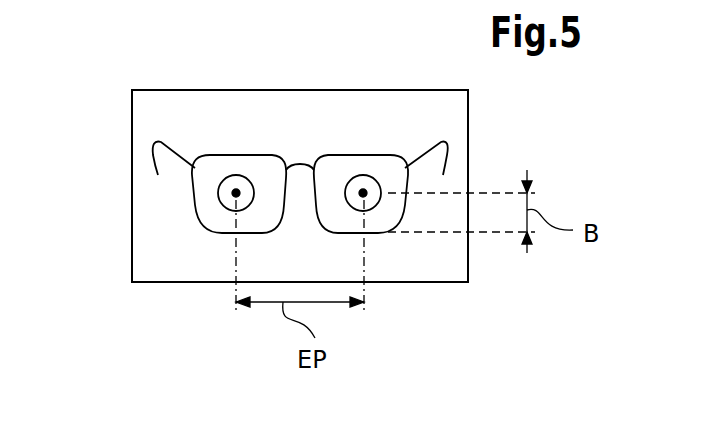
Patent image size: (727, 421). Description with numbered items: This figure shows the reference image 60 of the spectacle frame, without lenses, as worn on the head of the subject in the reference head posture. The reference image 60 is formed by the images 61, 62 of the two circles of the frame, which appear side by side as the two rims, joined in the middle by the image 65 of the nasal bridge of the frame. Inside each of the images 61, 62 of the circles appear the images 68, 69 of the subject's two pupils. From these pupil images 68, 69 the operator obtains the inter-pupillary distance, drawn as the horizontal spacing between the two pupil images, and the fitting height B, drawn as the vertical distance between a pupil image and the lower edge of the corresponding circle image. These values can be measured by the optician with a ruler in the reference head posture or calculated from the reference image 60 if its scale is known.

The reference image 60 is at (132, 122).
The image of the first circle of the frame 61 is at (237, 155).
The image of the second circle of the frame 62 is at (364, 155).
The image of the nasal bridge 65 is at (302, 162).
The image of the first pupil 68 is at (236, 193).
The image of the second pupil 69 is at (365, 195).